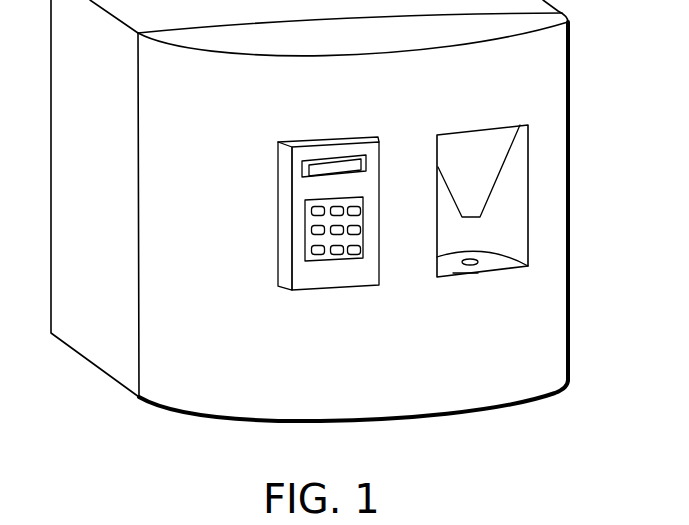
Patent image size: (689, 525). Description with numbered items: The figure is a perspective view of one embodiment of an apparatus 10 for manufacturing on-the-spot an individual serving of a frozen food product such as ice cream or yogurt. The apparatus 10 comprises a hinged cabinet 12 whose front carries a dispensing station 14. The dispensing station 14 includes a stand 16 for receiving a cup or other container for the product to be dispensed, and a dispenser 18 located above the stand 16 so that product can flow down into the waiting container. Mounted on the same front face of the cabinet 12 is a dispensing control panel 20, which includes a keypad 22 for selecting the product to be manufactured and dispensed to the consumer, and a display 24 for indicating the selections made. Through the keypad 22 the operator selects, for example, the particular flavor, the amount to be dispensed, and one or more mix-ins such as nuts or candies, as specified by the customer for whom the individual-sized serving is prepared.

The apparatus 10 is at (72, 407).
The hinged cabinet 12 is at (400, 390).
The dispensing station 14 is at (523, 202).
The stand 16 is at (472, 264).
The dispenser 18 is at (507, 160).
The dispensing control panel 20 is at (310, 213).
The keypad 22 is at (310, 165).
The display 24 is at (305, 253).